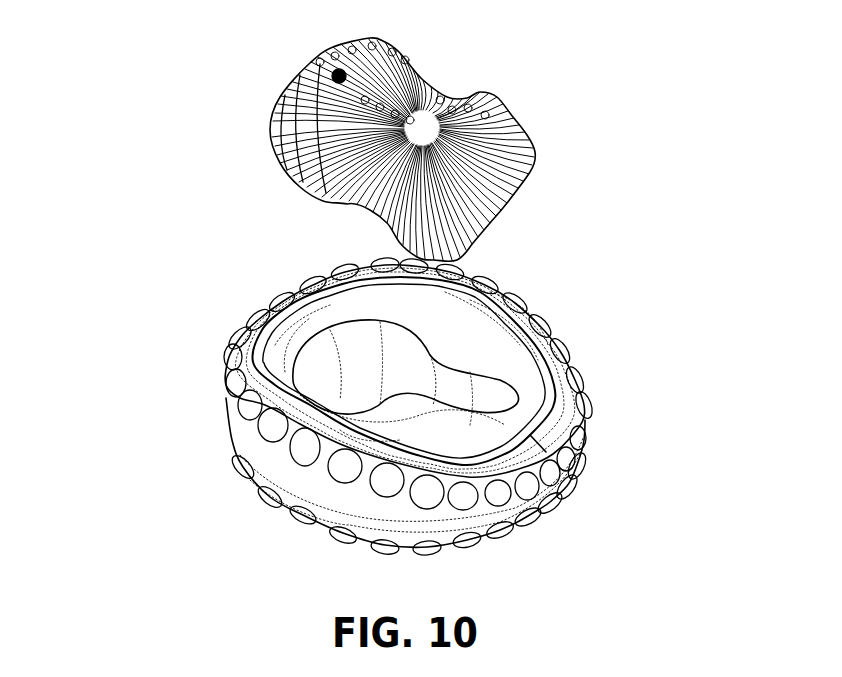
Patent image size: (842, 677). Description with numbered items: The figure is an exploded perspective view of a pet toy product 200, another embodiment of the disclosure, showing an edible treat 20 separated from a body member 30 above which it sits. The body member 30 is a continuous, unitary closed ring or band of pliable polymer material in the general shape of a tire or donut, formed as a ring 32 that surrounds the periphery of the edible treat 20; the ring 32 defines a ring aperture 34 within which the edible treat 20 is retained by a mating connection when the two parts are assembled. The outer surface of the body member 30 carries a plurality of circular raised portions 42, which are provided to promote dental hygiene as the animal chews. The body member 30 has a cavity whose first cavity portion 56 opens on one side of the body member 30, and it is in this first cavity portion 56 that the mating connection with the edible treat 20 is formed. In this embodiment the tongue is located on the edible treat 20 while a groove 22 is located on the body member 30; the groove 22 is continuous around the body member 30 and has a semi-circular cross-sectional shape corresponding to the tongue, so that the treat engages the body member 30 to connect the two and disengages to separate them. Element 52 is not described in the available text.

The pet toy product 200 is at (156, 102).
The edible treat 20 is at (516, 88).
The groove 22 is at (478, 186).
The first cavity portion 56 is at (275, 148).
The body member 30 is at (606, 372).
The ring 32 is at (298, 418).
The ring aperture 34 is at (290, 333).
The circular raised portions 42 is at (590, 437).
The cavity 52 is at (361, 338).